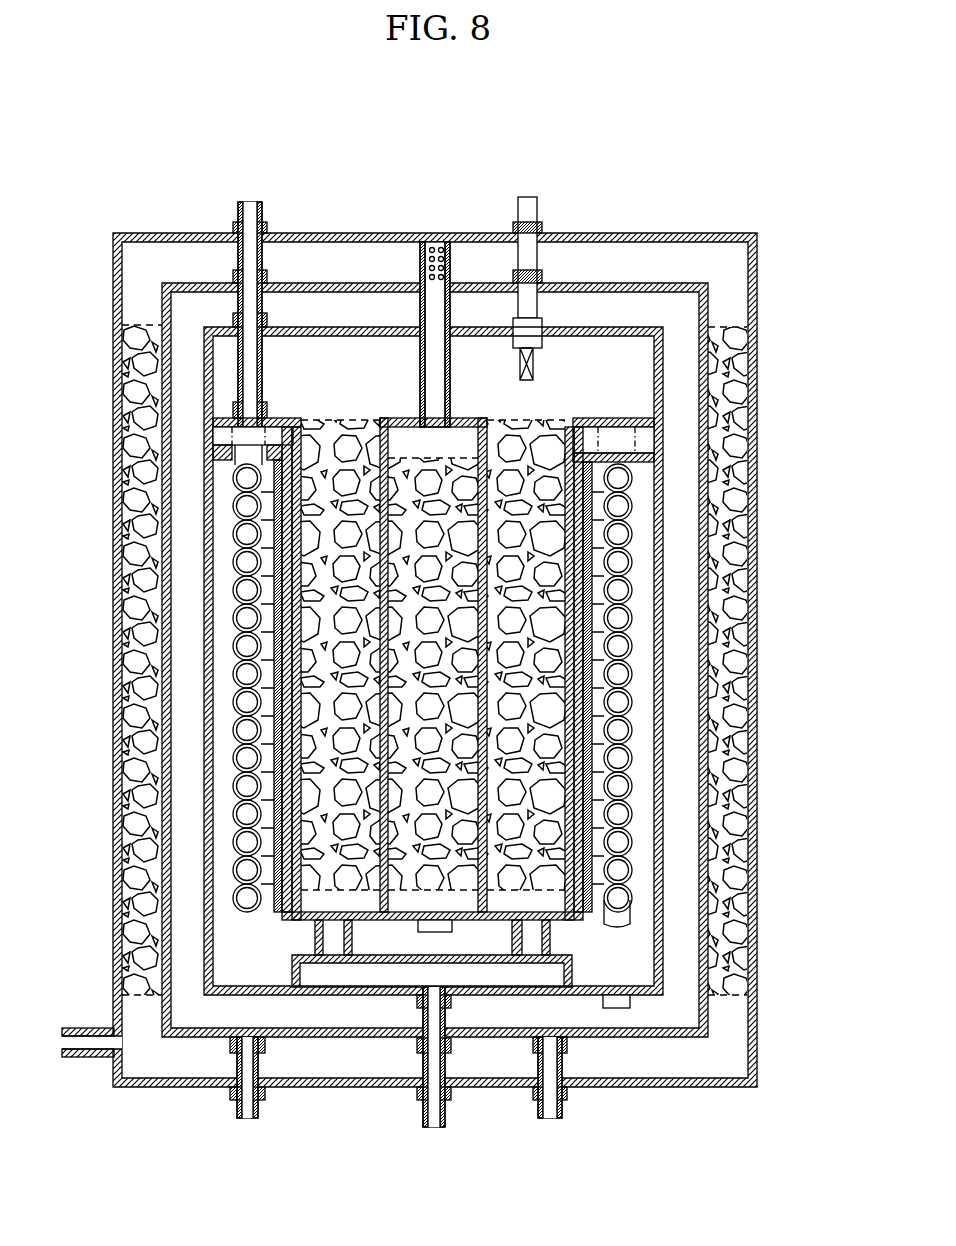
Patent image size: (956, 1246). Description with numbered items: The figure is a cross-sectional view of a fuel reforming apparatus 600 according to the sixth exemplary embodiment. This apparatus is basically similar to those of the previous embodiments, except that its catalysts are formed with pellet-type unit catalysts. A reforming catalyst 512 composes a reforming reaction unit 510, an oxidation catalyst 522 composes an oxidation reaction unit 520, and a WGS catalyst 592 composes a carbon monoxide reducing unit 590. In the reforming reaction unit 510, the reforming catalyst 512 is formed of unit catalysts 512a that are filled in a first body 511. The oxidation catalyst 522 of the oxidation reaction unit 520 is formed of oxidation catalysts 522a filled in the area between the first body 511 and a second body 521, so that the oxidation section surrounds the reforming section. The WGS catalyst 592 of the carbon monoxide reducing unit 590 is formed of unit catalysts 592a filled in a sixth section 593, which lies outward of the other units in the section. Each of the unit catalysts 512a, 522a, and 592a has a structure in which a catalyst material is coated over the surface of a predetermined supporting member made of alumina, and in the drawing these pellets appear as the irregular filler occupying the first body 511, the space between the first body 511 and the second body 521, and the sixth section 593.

The fuel reforming apparatus 600 is at (456, 153).
The carbon monoxide reducing unit 590 is at (758, 628).
The WGS catalyst 592 is at (742, 714).
The unit catalysts 592a is at (740, 771).
The sixth section 593 is at (722, 1018).
The oxidation reaction unit 520 is at (293, 485).
The oxidation catalyst 522 is at (301, 787).
The oxidation catalysts 522a is at (252, 830).
The second body 521 is at (276, 893).
The reforming reaction unit 510 is at (371, 565).
The first body 511 is at (404, 652).
The reforming catalyst 512 is at (384, 608).
The unit catalysts 512a is at (384, 688).